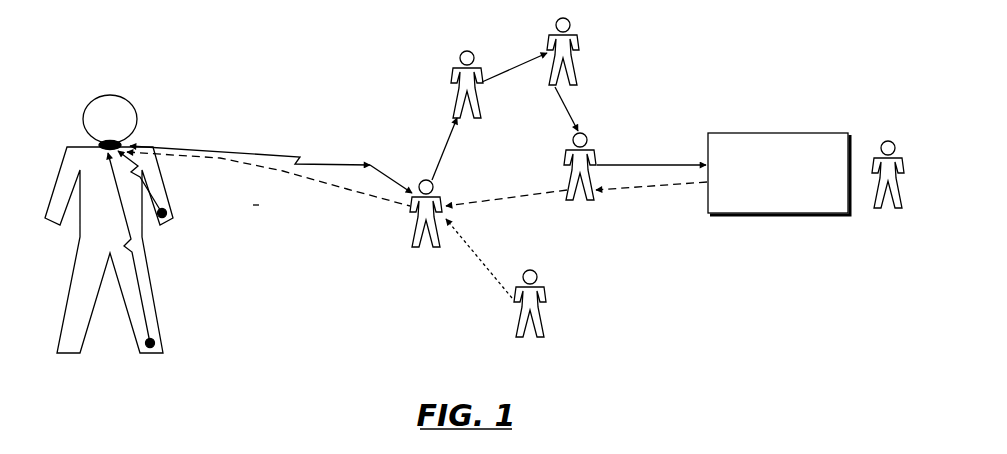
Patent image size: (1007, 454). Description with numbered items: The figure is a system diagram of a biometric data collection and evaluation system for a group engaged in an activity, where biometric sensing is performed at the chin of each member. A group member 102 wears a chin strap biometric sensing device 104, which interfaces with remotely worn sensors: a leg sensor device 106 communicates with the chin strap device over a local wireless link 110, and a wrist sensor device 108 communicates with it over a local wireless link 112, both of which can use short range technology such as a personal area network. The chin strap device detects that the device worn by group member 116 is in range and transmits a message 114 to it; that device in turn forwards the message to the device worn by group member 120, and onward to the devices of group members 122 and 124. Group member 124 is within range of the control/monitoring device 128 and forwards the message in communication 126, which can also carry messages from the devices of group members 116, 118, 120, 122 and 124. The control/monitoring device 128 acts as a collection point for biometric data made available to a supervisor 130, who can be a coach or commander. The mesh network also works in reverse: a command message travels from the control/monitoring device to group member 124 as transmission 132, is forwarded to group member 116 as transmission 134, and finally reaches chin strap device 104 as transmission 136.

The group member 102 is at (90, 390).
The chin strap biometric sensing device 104 is at (92, 143).
The leg sensor device 106 is at (160, 345).
The wrist sensor device 108 is at (173, 211).
The local wireless link 110 is at (143, 311).
The local wireless link 112 is at (143, 188).
The message 114 is at (268, 155).
The group member 116 is at (413, 243).
The group member 118 is at (518, 333).
The group member 120 is at (452, 82).
The group member 122 is at (546, 42).
The group member 124 is at (567, 163).
The communication 126 is at (678, 165).
The control/monitoring device 128 is at (775, 133).
The supervisor 130 is at (902, 167).
The transmission 132 is at (622, 190).
The transmission 134 is at (502, 198).
The transmission 136 is at (283, 172).